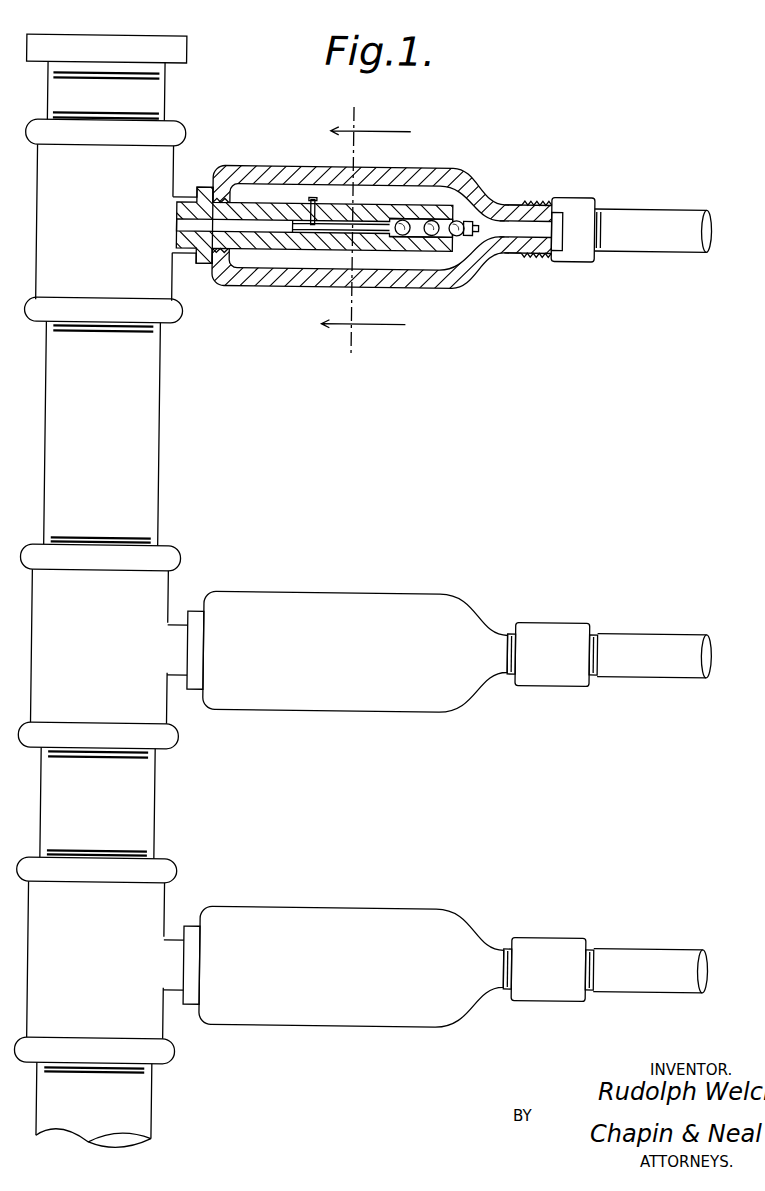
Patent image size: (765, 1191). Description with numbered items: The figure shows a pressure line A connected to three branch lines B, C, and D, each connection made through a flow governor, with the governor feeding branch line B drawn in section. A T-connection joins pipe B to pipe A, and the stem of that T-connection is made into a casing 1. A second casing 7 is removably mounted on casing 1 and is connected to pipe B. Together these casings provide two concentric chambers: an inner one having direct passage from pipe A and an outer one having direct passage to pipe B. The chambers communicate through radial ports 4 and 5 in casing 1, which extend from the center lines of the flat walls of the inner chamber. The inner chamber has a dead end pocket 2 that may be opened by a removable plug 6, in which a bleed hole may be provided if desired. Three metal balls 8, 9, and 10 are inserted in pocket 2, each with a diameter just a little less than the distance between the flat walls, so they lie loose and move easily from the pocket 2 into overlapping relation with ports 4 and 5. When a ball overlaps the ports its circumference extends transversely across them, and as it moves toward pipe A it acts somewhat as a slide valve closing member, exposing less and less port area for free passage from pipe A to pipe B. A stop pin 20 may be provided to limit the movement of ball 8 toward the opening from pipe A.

The casing 1 is at (273, 238).
The dead end pocket 2 is at (492, 233).
The radial port 4 is at (362, 207).
The radial port 5 is at (365, 241).
The removable plug 6 is at (505, 203).
The second casing 7 is at (263, 166).
The metal ball 8 is at (435, 196).
The metal ball 9 is at (465, 219).
The metal ball 10 is at (476, 217).
The stop pin 20 is at (309, 196).
The pressure line A is at (152, 431).
The branch line B is at (630, 204).
The branch line C is at (627, 631).
The branch line D is at (627, 942).